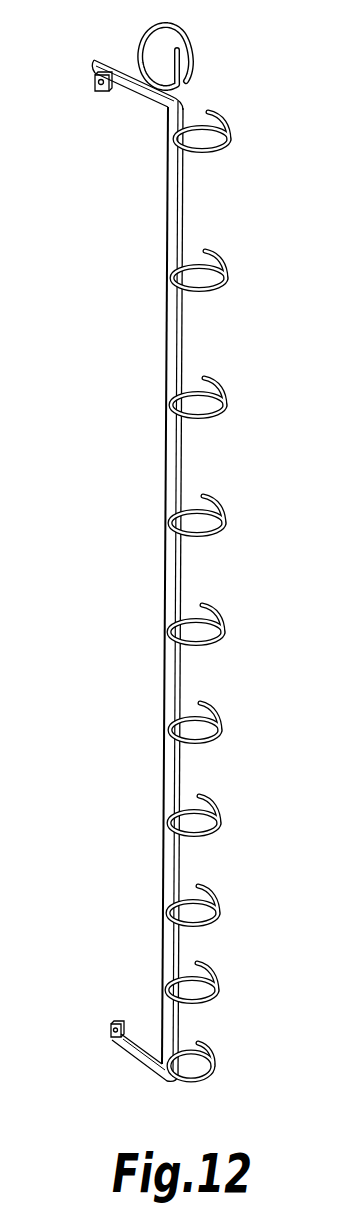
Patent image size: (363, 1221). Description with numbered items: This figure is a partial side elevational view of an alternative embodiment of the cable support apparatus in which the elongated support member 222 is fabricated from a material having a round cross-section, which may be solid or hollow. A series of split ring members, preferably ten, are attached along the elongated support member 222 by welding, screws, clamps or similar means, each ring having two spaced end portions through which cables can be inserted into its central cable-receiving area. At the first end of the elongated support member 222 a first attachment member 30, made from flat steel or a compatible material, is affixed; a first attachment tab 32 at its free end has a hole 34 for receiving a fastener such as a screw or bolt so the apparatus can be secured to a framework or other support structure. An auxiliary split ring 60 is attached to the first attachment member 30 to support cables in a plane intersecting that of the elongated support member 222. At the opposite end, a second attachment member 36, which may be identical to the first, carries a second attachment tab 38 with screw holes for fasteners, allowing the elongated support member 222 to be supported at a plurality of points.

The first attachment member 30 is at (100, 56).
The first attachment tab 32 is at (107, 92).
The hole 34 is at (97, 83).
The second attachment member 36 is at (128, 1050).
The second attachment tab 38 is at (110, 1023).
The auxiliary split ring 60 is at (192, 44).
The elongated support member 222 is at (170, 340).